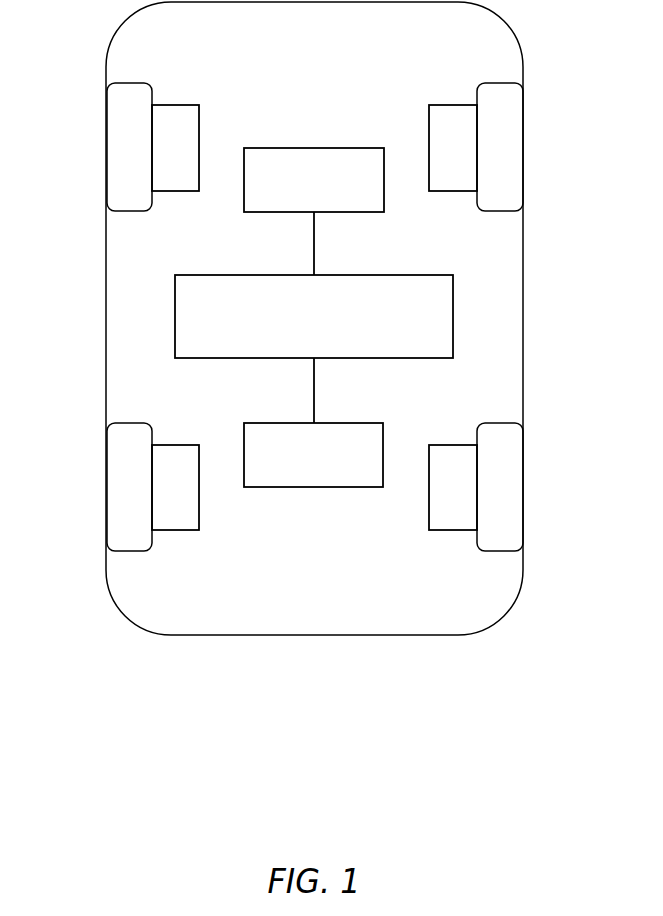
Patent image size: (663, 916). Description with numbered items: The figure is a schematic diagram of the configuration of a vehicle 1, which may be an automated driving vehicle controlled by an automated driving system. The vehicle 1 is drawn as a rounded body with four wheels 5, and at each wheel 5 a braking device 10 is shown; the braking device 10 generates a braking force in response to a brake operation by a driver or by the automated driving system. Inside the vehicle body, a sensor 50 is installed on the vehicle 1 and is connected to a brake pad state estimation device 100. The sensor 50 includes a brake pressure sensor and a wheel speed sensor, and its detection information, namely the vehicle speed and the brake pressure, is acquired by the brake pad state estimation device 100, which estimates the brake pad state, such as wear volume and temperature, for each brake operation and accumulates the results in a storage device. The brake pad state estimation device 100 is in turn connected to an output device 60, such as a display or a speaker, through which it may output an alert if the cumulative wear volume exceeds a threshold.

The vehicle 1 is at (315, 636).
The wheel 5 is at (106, 150).
The braking device 10 is at (177, 105).
The sensor 50 is at (313, 147).
The output device 60 is at (315, 488).
The brake pad state estimation device 100 is at (221, 275).